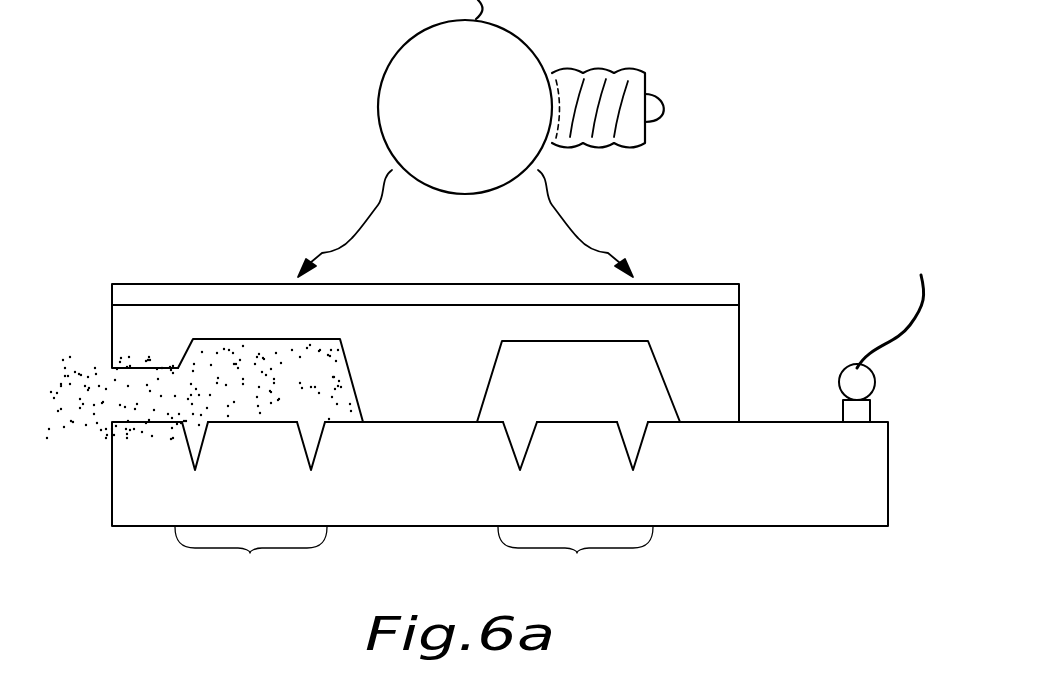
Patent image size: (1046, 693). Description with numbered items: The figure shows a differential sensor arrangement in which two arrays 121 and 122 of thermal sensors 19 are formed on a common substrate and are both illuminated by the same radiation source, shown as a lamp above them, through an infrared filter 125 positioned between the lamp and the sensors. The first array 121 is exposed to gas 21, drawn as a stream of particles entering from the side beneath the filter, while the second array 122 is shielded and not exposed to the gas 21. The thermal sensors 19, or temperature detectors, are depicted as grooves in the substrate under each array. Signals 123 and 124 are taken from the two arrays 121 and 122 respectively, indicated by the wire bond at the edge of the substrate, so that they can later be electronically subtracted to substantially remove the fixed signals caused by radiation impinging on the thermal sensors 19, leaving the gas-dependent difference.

The thermal sensors 19 is at (525, 422).
The gas 21 is at (82, 393).
The first array of thermal sensors 121 is at (353, 372).
The second array of thermal sensors 122 is at (652, 380).
The first signal 123 is at (851, 341).
The second signal 124 is at (905, 318).
The infrared filter 125 is at (702, 278).